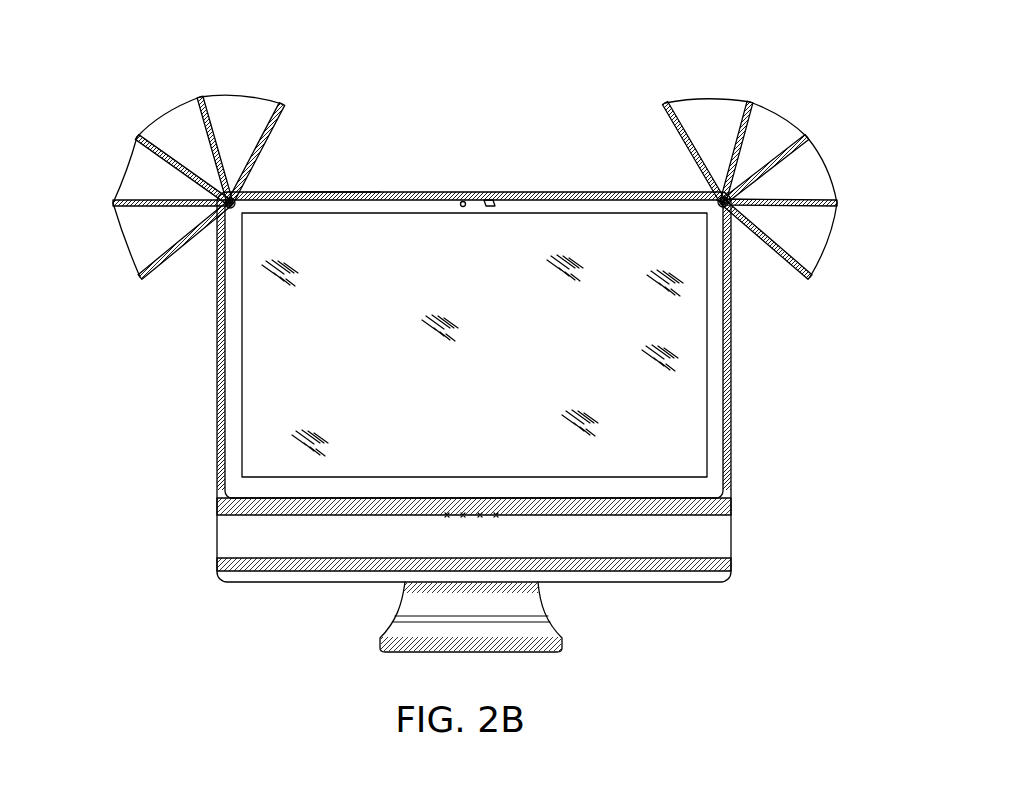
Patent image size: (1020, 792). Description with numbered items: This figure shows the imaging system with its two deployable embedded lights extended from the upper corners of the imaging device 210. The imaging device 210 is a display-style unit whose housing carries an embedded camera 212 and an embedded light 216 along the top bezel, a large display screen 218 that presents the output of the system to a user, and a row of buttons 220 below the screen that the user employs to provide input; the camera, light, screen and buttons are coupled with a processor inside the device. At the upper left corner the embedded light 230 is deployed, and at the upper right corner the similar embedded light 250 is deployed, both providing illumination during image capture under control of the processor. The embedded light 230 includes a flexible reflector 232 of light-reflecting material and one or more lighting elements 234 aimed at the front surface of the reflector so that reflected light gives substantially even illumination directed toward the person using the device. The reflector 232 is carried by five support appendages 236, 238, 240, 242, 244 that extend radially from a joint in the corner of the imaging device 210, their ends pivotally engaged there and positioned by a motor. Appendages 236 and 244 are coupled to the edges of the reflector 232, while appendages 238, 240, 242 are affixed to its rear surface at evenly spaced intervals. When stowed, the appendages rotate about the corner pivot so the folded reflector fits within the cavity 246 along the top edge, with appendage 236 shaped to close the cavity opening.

The imaging device 210 is at (206, 578).
The embedded camera 212 is at (500, 200).
The embedded light 216 is at (463, 200).
The display screen 218 is at (241, 447).
The buttons 220 is at (455, 525).
The embedded light 230 is at (188, 220).
The reflector 232 is at (167, 123).
The lighting elements 234 is at (225, 225).
The support appendage 236 is at (138, 278).
The support appendage 238 is at (113, 203).
The support appendage 240 is at (137, 137).
The support appendage 242 is at (200, 97).
The support appendage 244 is at (283, 107).
The cavity 246 is at (340, 191).
The embedded light 250 is at (808, 121).